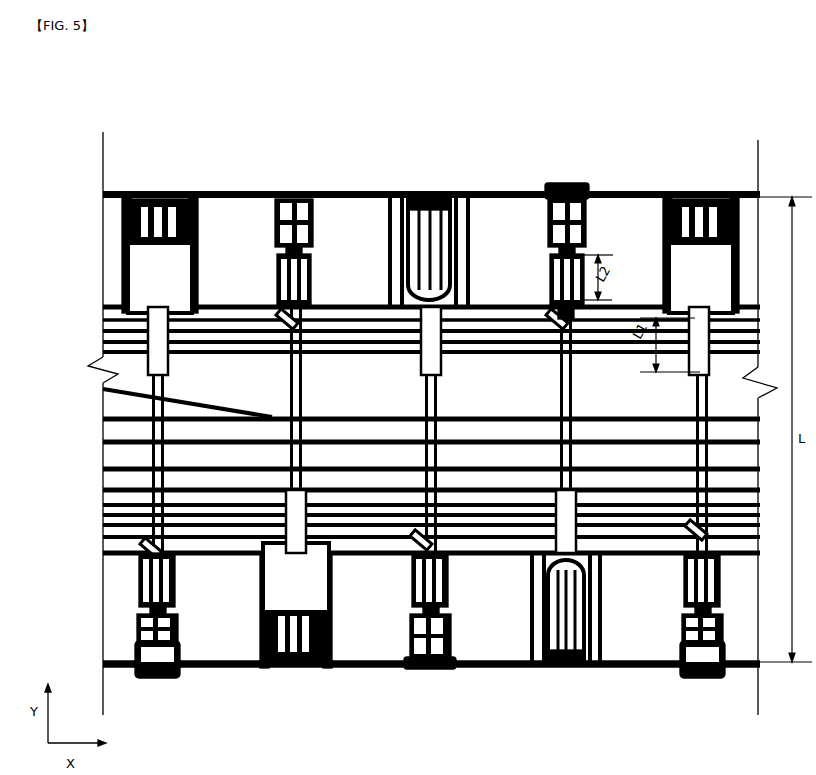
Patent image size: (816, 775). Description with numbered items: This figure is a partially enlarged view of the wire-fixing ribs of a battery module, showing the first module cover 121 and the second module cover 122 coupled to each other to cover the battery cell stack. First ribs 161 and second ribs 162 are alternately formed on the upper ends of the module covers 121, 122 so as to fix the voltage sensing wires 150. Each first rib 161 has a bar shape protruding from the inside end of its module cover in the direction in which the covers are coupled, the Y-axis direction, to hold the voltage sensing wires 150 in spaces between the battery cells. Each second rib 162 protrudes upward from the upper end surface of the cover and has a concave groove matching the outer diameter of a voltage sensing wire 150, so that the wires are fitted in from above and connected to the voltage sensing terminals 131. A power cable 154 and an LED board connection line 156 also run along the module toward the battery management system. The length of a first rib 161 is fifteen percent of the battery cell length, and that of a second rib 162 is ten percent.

The first module cover 121 is at (377, 668).
The second module cover 122 is at (241, 207).
The voltage sensing terminal 131 is at (305, 195).
The voltage sensing wire 150 is at (103, 332).
The power cable 154 is at (103, 488).
The LED board connection line 156 is at (103, 430).
The first rib 161 is at (663, 308).
The second rib 162 is at (552, 268).